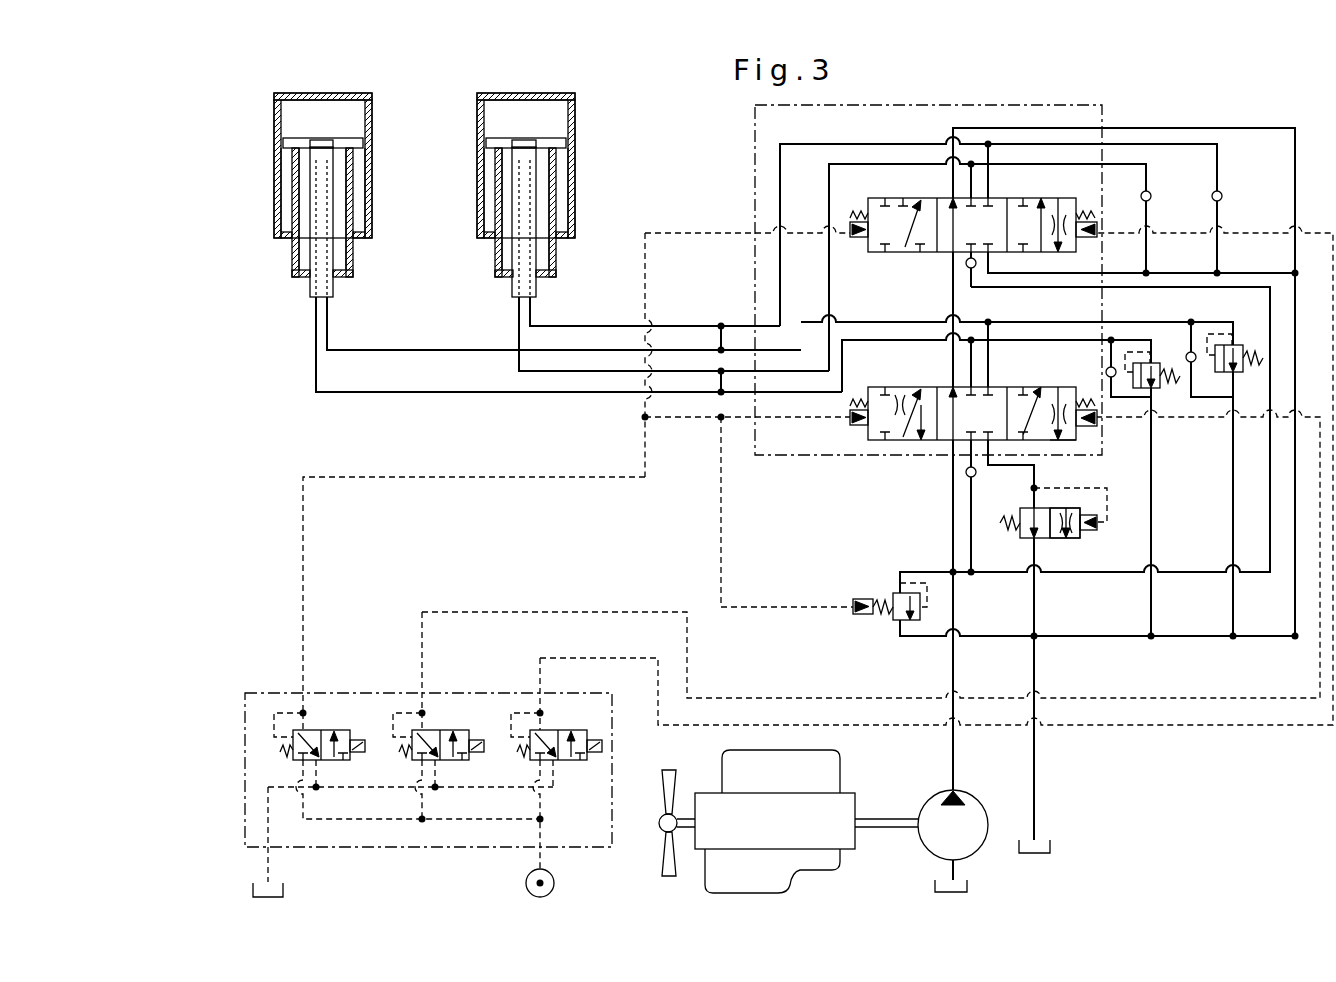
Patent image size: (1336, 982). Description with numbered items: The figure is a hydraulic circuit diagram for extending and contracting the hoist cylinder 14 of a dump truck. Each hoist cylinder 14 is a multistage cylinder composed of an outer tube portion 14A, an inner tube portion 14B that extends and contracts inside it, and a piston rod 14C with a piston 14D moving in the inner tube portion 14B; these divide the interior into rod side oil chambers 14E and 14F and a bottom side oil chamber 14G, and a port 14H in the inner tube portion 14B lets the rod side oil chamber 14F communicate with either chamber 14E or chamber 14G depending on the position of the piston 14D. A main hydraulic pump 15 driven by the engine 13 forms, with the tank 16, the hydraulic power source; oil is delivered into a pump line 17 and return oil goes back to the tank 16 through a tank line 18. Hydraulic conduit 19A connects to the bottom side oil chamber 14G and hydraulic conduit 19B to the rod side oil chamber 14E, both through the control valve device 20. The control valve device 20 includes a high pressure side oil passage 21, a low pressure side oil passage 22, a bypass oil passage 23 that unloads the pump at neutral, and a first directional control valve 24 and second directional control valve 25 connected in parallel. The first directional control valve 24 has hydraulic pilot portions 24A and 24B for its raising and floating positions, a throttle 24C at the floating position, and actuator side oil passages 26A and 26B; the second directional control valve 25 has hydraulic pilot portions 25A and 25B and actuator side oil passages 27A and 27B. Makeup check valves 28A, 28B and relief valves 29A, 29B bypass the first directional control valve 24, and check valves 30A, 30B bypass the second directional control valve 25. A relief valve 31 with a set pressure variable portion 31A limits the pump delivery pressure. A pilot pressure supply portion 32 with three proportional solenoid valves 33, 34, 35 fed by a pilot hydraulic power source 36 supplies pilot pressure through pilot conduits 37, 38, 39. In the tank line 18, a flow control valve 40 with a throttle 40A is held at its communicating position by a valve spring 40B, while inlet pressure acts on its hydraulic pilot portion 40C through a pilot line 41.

The engine 13 is at (805, 835).
The hoist cylinder 14 is at (289, 275).
The outer tube portion 14A is at (276, 130).
The inner tube portion 14B is at (293, 208).
The piston rod 14C is at (322, 280).
The piston 14D is at (322, 145).
The rod side oil chamber 14E is at (338, 250).
The rod side oil chamber 14F is at (357, 182).
The bottom side oil chamber 14G is at (333, 121).
The port 14H is at (294, 153).
The main hydraulic pump 15 is at (920, 845).
The tank 16 is at (285, 886).
The pump line 17 is at (952, 757).
The tank line 18 is at (1036, 766).
The hydraulic conduit 19A is at (388, 350).
The hydraulic conduit 19B is at (410, 392).
The control valve device 20 is at (781, 463).
The high pressure side oil passage 21 is at (1073, 575).
The low pressure side oil passage 22 is at (1177, 638).
The bypass oil passage 23 is at (951, 490).
The first directional control valve 24 is at (892, 442).
The hydraulic pilot portion 24A is at (850, 428).
The hydraulic pilot portion 24B is at (1097, 420).
The throttle 24C is at (1063, 441).
The second directional control valve 25 is at (1070, 198).
The hydraulic pilot portion 25A is at (855, 240).
The hydraulic pilot portion 25B is at (1096, 230).
The actuator side oil passage 26A is at (910, 322).
The actuator side oil passage 26B is at (874, 341).
The actuator side oil passage 27A is at (787, 144).
The actuator side oil passage 27B is at (856, 164).
The check valve 28A is at (1188, 353).
The check valve 28B is at (1106, 368).
The relief valve 29A is at (1237, 343).
The relief valve 29B is at (1162, 385).
The check valve 30A is at (1223, 195).
The check valve 30B is at (1152, 196).
The relief valve 31 is at (893, 590).
The set pressure variable portion 31A is at (862, 614).
The pilot pressure supply portion 32 is at (255, 692).
The solenoid valve 33 is at (338, 730).
The solenoid valve 34 is at (455, 730).
The solenoid valve 35 is at (573, 760).
The pilot hydraulic power source 36 is at (555, 883).
The pilot conduit 37 is at (541, 479).
The pilot conduit 38 is at (492, 611).
The pilot conduit 39 is at (562, 658).
The flow control valve 40 is at (1030, 506).
The throttle 40A is at (1081, 535).
The valve spring 40B is at (1006, 522).
The hydraulic pilot portion 40C is at (1098, 522).
The pilot line 41 is at (1108, 504).